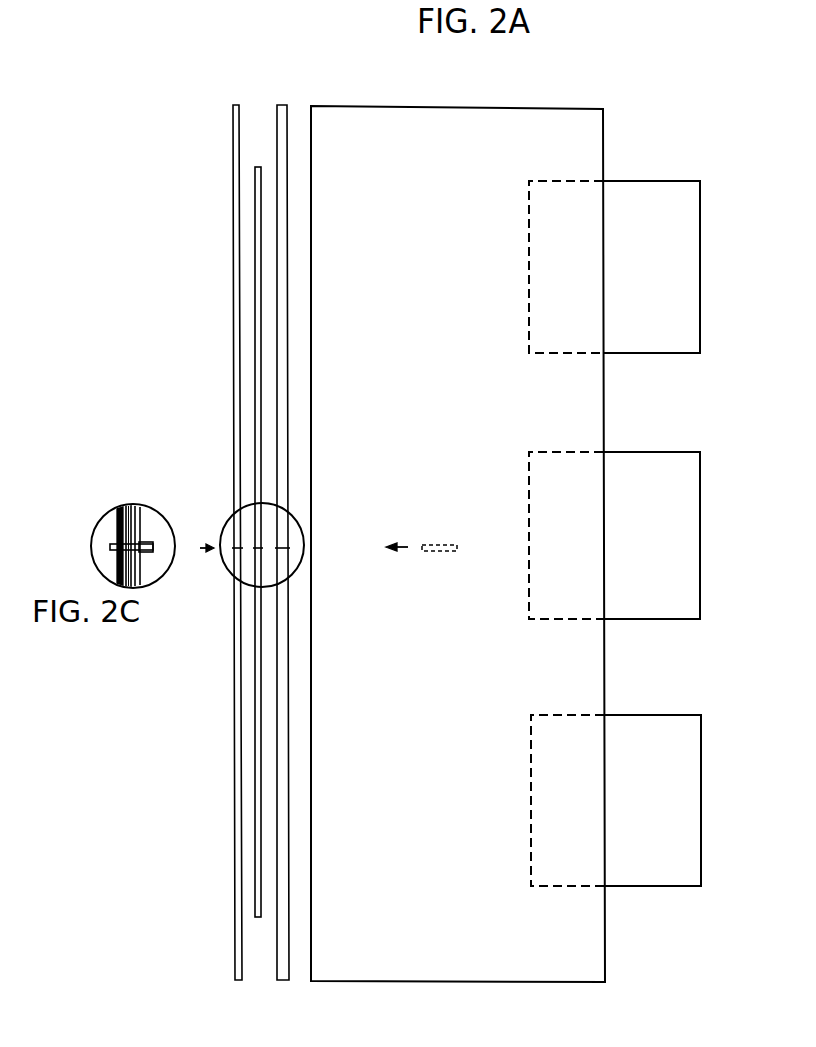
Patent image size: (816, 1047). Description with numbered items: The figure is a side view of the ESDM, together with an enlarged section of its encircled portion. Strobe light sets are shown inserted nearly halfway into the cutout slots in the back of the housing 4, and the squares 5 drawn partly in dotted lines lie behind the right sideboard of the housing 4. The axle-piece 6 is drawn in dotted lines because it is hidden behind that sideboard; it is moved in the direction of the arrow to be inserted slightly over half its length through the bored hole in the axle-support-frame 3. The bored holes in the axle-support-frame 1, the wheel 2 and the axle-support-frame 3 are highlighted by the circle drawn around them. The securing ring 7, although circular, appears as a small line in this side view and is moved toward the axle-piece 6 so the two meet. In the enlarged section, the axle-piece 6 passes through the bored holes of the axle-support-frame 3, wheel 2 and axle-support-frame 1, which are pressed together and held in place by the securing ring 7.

In FIG. 2A, the axle-support-frame 1 is at (233, 105).
In FIG. 2C, the axle-support-frame 1 is at (117, 508).
In FIG. 2A, the wheel 2 is at (258, 166).
In FIG. 2C, the wheel 2 is at (128, 507).
In FIG. 2A, the axle-support-frame 3 is at (283, 120).
In FIG. 2C, the axle-support-frame 3 is at (138, 507).
In FIG. 2A, the housing 4 is at (455, 127).
In FIG. 2A, the square element 5 is at (690, 193).
In FIG. 2A, the axle-piece 6 is at (440, 545).
In FIG. 2A, the securing ring 7 is at (207, 550).